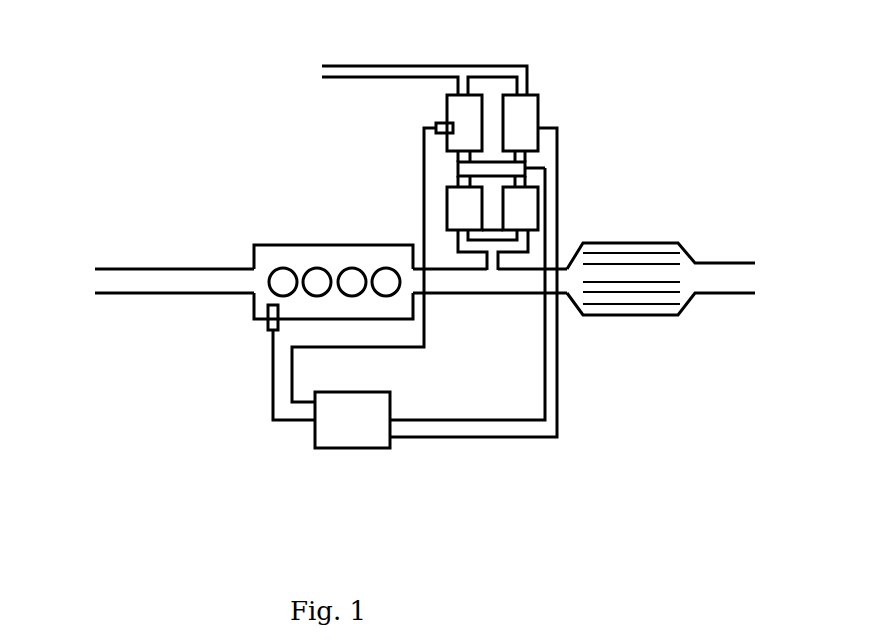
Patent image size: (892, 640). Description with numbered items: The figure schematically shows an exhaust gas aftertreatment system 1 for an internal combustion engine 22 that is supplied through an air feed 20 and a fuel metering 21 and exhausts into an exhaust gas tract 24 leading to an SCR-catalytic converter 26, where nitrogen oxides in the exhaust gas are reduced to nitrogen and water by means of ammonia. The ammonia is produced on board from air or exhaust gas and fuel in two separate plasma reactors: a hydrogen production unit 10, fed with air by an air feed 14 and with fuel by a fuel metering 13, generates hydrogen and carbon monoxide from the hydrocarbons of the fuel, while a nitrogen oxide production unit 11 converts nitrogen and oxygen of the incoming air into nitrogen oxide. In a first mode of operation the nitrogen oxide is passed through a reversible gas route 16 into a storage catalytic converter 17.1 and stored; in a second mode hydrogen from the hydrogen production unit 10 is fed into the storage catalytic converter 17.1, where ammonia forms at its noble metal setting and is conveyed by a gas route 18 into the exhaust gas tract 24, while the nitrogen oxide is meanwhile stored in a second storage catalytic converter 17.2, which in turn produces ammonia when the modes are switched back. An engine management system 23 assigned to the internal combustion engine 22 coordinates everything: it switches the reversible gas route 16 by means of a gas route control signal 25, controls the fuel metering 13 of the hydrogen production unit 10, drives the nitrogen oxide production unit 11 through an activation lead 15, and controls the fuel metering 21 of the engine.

The exhaust gas aftertreatment system 1 is at (697, 85).
The hydrogen production unit 10 is at (460, 105).
The nitrogen oxide production unit 11 is at (510, 100).
The fuel metering 13 is at (442, 121).
The air feed 14 is at (373, 75).
The activation lead 15 is at (557, 127).
The reversible gas route 16 is at (523, 168).
The storage catalytic converter 17.1 is at (470, 207).
The second storage catalytic converter 17.2 is at (527, 218).
The gas route 18 is at (520, 246).
The air feed 20 is at (182, 293).
The fuel metering 21 is at (270, 332).
The internal combustion engine 22 is at (318, 307).
The engine management system 23 is at (341, 435).
The exhaust gas tract 24 is at (471, 286).
The gas route control signal 25 is at (498, 418).
The SCR-catalytic converter 26 is at (630, 316).